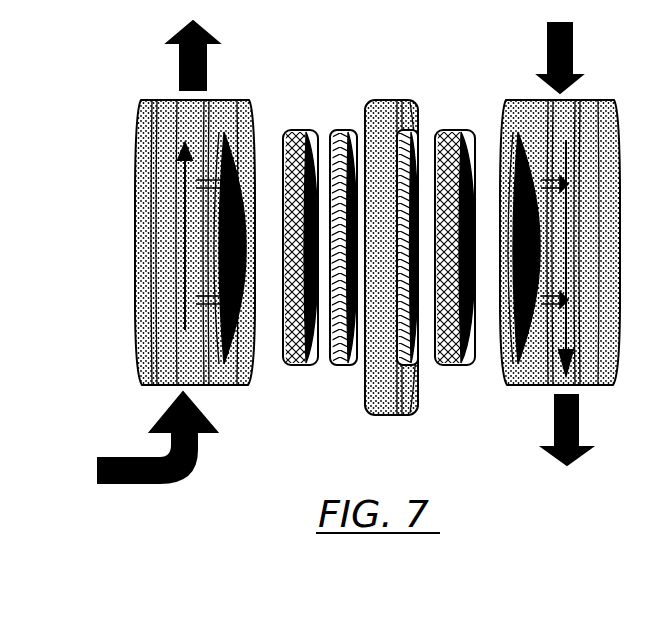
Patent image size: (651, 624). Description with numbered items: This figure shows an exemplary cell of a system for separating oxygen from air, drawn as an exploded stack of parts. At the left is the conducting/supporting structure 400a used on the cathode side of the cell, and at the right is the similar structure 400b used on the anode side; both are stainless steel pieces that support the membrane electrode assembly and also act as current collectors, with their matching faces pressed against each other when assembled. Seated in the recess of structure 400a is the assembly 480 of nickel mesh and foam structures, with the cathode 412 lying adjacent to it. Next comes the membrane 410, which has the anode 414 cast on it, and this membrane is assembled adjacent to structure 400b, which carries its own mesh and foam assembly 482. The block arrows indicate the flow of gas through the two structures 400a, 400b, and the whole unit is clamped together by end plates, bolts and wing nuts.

The conducting/supporting structure 400a is at (135, 262).
The structure 400b is at (612, 152).
The assembly of nickel mesh and foam structures 480 is at (305, 128).
The cathode 412 is at (345, 368).
The membrane 410 is at (410, 98).
The anode 414 is at (410, 355).
The assembly 482 is at (462, 128).